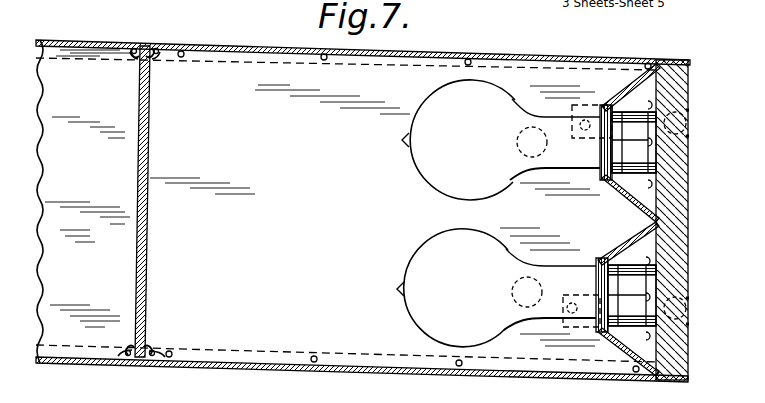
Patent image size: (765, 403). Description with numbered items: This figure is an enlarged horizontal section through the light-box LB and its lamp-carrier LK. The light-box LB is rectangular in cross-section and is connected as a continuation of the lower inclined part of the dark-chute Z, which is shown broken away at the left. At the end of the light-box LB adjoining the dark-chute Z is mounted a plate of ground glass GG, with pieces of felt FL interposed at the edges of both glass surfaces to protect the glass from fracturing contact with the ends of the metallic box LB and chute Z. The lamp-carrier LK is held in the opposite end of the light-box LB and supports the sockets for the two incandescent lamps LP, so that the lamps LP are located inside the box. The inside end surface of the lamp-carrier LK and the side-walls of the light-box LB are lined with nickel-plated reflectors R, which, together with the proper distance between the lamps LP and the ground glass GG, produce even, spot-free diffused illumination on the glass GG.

The light-box LB is at (242, 47).
The pieces of felt FL is at (137, 59).
The reflectors R is at (300, 56).
The ground glass GG is at (146, 253).
The dark-chute Z is at (55, 287).
The incandescent lamps LP is at (489, 190).
The lamp-carrier LK is at (689, 220).